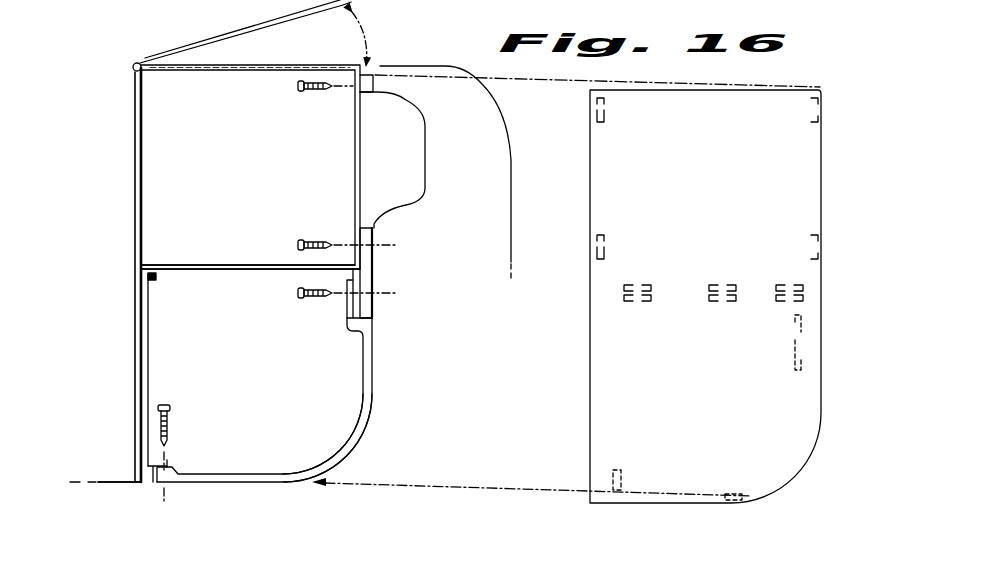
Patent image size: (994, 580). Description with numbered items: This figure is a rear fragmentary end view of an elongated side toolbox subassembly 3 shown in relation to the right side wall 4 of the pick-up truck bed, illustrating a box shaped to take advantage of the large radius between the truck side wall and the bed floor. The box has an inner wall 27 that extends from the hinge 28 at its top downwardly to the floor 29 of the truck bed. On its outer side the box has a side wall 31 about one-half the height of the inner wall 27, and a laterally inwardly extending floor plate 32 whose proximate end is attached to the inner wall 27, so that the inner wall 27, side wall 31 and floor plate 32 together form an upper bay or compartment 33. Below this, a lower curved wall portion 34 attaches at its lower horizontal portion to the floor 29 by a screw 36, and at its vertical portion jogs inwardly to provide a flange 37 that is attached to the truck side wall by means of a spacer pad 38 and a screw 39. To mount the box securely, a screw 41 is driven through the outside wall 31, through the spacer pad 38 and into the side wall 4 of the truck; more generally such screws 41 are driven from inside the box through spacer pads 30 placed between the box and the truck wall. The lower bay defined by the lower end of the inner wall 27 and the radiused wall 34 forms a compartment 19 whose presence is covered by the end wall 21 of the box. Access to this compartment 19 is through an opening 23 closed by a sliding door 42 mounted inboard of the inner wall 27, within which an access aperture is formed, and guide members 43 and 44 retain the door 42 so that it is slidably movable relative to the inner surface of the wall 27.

The left toolbox subassembly 3 is at (131, 130).
The right side wall 4 is at (586, 146).
The compartment 19 is at (268, 393).
The end wall 21 is at (668, 198).
The opening 23 is at (136, 346).
The inner wall 27 is at (143, 178).
The hinge 28 is at (136, 65).
The floor 29 is at (118, 481).
The spacer pad 30 is at (375, 81).
The side wall 31 is at (361, 152).
The floor plate 32 is at (218, 268).
The upper bay 33 is at (250, 183).
The lower curved wall portion 34 is at (367, 424).
The screw 36 is at (171, 421).
The flange 37 is at (345, 302).
The spacer pad 38 is at (364, 279).
The screw 39 is at (297, 293).
The screw 41 is at (310, 93).
The sliding door 42 is at (150, 353).
The guide member 43 is at (156, 281).
The guide member 44 is at (165, 461).